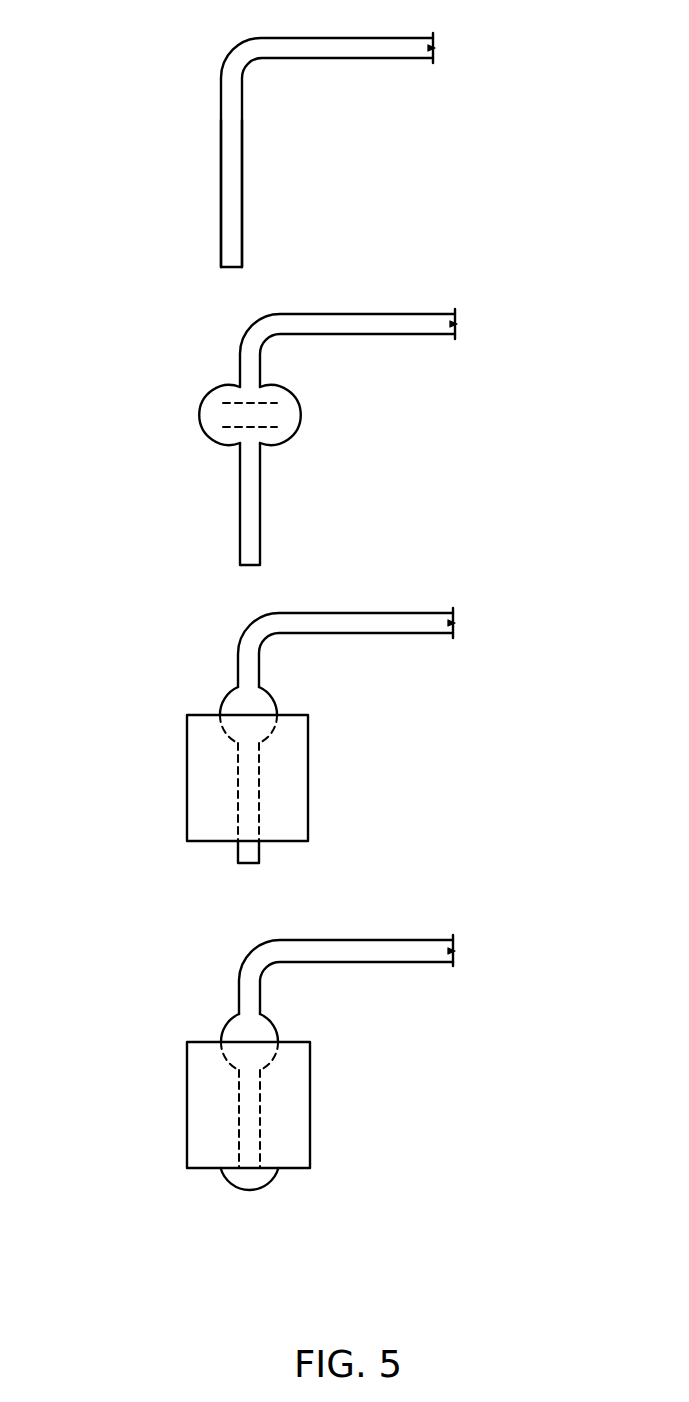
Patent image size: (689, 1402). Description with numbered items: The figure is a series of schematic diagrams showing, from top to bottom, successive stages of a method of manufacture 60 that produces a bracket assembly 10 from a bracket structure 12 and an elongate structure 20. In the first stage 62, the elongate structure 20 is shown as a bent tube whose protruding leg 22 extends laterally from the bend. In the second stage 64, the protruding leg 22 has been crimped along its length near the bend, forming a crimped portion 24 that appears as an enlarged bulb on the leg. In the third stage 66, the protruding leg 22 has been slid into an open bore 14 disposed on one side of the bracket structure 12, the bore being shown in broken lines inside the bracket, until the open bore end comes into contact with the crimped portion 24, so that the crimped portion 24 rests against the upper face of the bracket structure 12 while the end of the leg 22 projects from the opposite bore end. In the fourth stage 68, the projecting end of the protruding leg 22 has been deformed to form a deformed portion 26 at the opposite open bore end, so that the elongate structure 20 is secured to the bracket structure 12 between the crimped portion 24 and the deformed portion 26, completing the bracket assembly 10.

The bracket assembly 10 is at (402, 1151).
The bracket structure 12 is at (306, 941).
The open bores 14 is at (308, 766).
The elongate structure 20 is at (377, 53).
The protruding legs 22 is at (231, 170).
The crimped portion 24 is at (221, 415).
The deformed portion 26 is at (263, 1185).
The method of assembly 60 is at (126, 58).
The first step: bent tube 62 is at (441, 172).
The second step: forming bulb 64 is at (432, 451).
The third step: inserting tube into housing 66 is at (452, 742).
The fourth step: deforming tube end 68 is at (474, 1054).